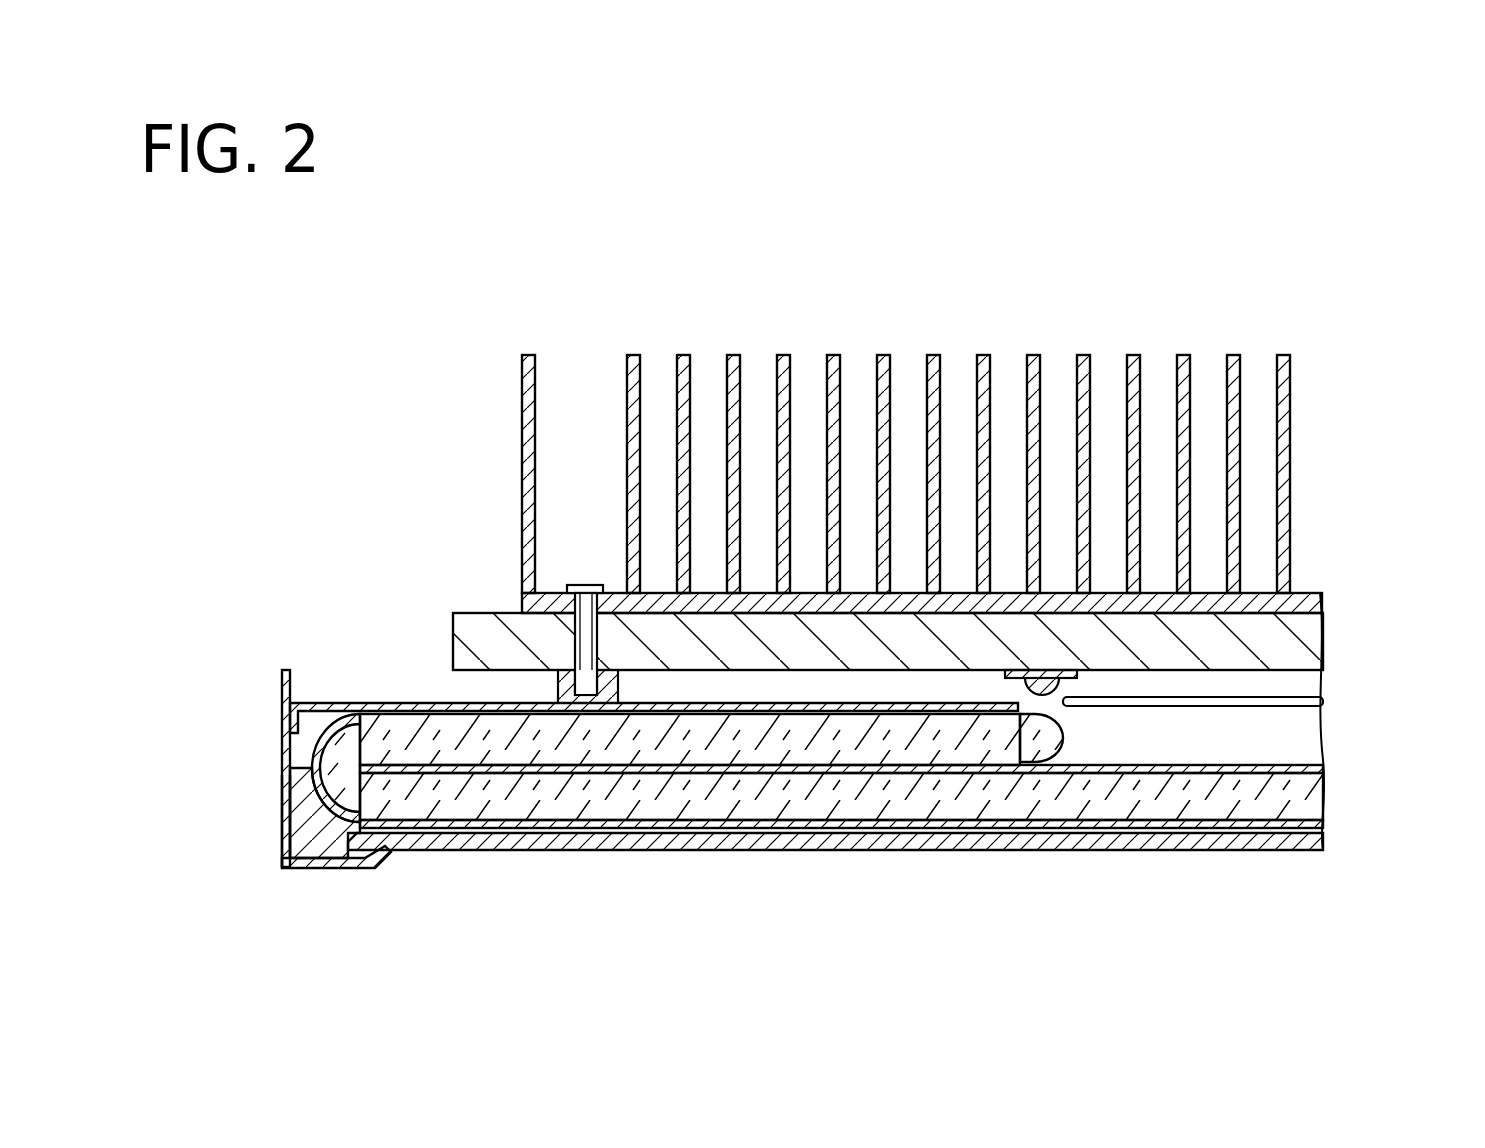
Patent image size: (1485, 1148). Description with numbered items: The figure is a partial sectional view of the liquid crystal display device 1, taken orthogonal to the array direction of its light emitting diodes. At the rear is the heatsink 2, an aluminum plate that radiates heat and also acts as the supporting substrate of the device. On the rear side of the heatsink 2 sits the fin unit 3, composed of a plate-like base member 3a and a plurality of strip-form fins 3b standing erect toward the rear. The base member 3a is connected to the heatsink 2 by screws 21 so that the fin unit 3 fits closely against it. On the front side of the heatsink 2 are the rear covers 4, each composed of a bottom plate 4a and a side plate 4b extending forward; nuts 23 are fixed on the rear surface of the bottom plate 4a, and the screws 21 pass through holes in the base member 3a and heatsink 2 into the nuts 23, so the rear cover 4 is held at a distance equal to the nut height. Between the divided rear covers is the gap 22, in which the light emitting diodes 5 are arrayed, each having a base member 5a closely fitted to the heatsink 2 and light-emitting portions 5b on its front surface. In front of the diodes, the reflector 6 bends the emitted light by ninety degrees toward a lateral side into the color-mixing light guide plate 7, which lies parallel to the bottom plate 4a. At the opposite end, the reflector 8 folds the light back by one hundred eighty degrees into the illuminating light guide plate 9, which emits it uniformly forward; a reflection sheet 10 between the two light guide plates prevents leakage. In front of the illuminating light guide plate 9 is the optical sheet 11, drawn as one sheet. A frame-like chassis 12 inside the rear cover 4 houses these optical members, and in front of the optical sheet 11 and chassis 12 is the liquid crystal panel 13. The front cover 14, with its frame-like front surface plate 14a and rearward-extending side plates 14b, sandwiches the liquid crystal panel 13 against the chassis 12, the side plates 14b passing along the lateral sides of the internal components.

The liquid crystal display device 1 is at (951, 584).
The heatsink 2 is at (1300, 647).
The fin unit 3 is at (986, 484).
The base member 3a is at (960, 595).
The fins 3b is at (1290, 487).
The rear cover 4 is at (642, 715).
The bottom plate 4a is at (340, 705).
The side plate 4b is at (281, 712).
The light emitting diode 5 is at (1035, 475).
The base member 5a is at (1021, 670).
The light-emitting portion 5b is at (1052, 680).
The reflector 6 is at (1037, 740).
The color-mixing light guide plate 7 is at (547, 730).
The reflector 8 is at (287, 768).
The illuminating light guide plate 9 is at (680, 788).
The reflection sheet 10 is at (607, 767).
The optical sheet 11 is at (745, 828).
The chassis 12 is at (287, 802).
The liquid crystal panel 13 is at (827, 843).
The front cover 14 is at (264, 867).
The front surface plate 14a is at (307, 868).
The side plate 14b is at (280, 843).
The screw 21 is at (587, 590).
The gap 22 is at (1063, 693).
The nut 23 is at (560, 689).